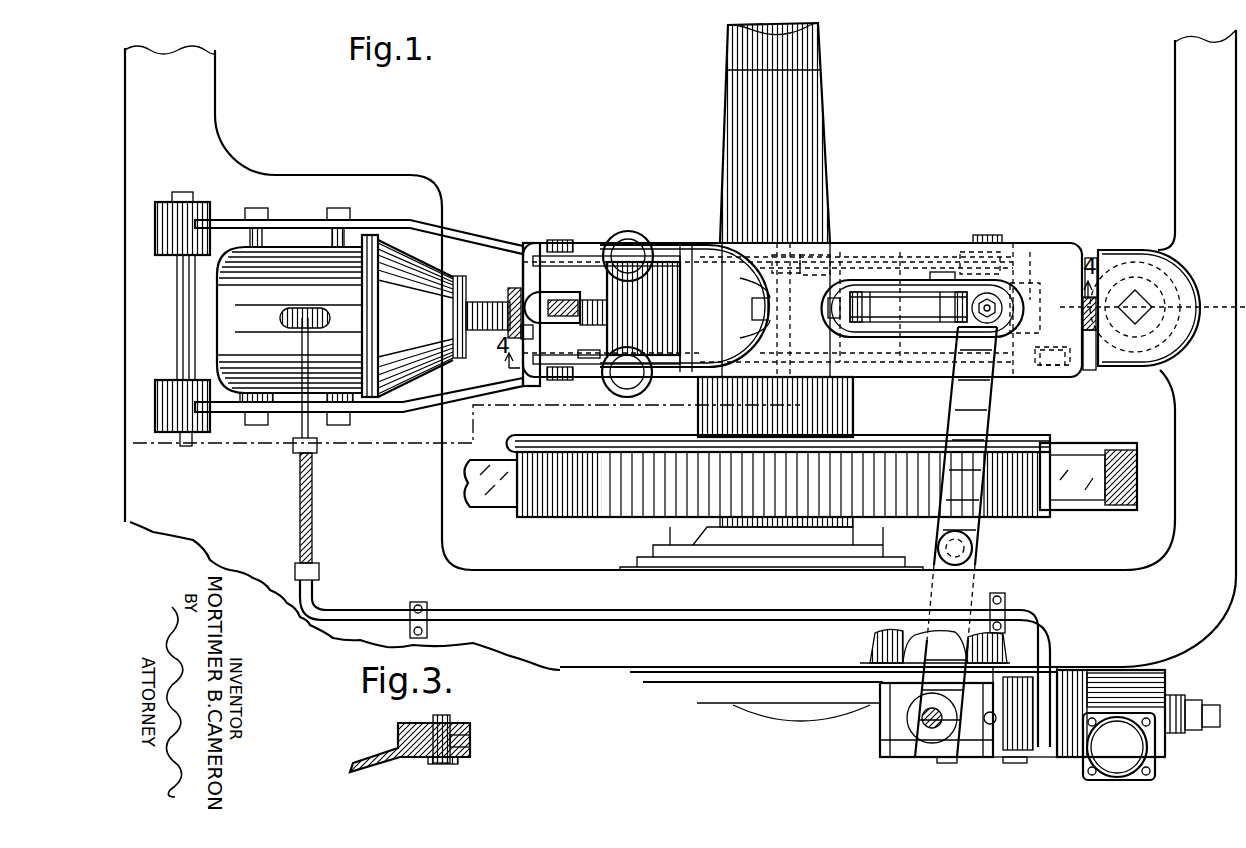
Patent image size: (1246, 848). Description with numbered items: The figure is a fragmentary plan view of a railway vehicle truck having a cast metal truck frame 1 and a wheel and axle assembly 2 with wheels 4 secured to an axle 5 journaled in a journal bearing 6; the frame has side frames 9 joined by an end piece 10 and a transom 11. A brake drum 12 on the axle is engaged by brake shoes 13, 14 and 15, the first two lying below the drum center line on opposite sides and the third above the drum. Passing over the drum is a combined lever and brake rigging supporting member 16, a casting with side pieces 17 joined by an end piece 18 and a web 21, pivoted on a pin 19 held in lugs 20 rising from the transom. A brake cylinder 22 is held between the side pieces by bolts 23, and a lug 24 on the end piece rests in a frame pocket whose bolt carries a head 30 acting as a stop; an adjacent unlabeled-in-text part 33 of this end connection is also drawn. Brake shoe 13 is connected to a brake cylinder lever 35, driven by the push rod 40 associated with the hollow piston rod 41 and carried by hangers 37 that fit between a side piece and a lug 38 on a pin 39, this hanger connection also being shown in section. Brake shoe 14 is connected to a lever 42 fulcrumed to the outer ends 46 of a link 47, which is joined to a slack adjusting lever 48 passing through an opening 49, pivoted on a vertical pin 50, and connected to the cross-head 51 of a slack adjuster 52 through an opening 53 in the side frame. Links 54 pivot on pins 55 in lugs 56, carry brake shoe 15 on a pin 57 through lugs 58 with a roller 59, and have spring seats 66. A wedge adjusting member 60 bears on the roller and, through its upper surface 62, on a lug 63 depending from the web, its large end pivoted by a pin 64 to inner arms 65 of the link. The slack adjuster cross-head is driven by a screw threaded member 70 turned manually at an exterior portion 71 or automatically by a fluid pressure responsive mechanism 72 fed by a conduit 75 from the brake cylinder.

In FIG. 1, the truck frame 1 is at (180, 520).
In FIG. 1, the wheel and axle assembly 2 is at (700, 407).
In FIG. 1, the wheel 4 is at (590, 507).
In FIG. 1, the axle 5 is at (808, 158).
In FIG. 1, the journal bearing 6 is at (688, 688).
In FIG. 1, the side frame 9 is at (592, 655).
In FIG. 1, the end piece 10 is at (1190, 145).
In FIG. 1, the transom 11 is at (198, 86).
In FIG. 1, the brake drum 12 is at (654, 275).
In FIG. 1, the brake element 13 is at (593, 282).
In FIG. 1, the brake element 14 is at (980, 252).
In FIG. 1, the brake element 15 is at (693, 283).
In FIG. 1, the combined lever and brake rigging supporting member 16 is at (868, 258).
In FIG. 1, the side piece 17 is at (422, 228).
In FIG. 1, the end piece 18 is at (1092, 262).
In FIG. 3, the end piece 18 is at (420, 758).
In FIG. 1, the pin 19 is at (183, 308).
In FIG. 1, the lug 20 is at (163, 202).
In FIG. 1, the web 21 is at (888, 272).
In FIG. 1, the brake cylinder 22 is at (387, 250).
In FIG. 1, the bolt 23 is at (332, 208).
In FIG. 1, the lug 24 is at (1096, 370).
In FIG. 1, the head 30 is at (1142, 318).
In FIG. 1, the gear housing 33 is at (1146, 356).
In FIG. 1, the brake cylinder lever 35 is at (520, 334).
In FIG. 3, the brake hanger 37 is at (462, 743).
In FIG. 3, the lug 38 is at (455, 722).
In FIG. 1, the pin 39 is at (1006, 264).
In FIG. 3, the pin 39 is at (450, 766).
In FIG. 1, the push rod 40 is at (528, 298).
In FIG. 1, the brake cylinder piston rod 41 is at (481, 302).
In FIG. 1, the lever 42 is at (1055, 372).
In FIG. 1, the outer end 46 is at (1062, 366).
In FIG. 1, the link 47 is at (1042, 262).
In FIG. 1, the slack adjusting lever 48 is at (970, 498).
In FIG. 1, the opening 49 is at (962, 338).
In FIG. 1, the pin 50 is at (975, 552).
In FIG. 1, the cross-head 51 is at (937, 757).
In FIG. 1, the slack adjuster 52 is at (1042, 757).
In FIG. 1, the opening 53 is at (870, 660).
In FIG. 1, the link 54 is at (637, 262).
In FIG. 1, the pin 55 is at (552, 242).
In FIG. 1, the lug 56 is at (543, 252).
In FIG. 1, the pin 57 is at (770, 252).
In FIG. 1, the lug 58 is at (742, 335).
In FIG. 1, the roller 59 is at (816, 248).
In FIG. 1, the adjusting member 60 is at (838, 312).
In FIG. 1, the upper surface 62 is at (942, 272).
In FIG. 1, the lug 63 is at (788, 240).
In FIG. 1, the pin 64 is at (946, 292).
In FIG. 1, the inner arm 65 is at (905, 337).
In FIG. 1, the spring seat 66 is at (618, 250).
In FIG. 1, the screw threaded member 70 is at (972, 745).
In FIG. 1, the exterior portion 71 is at (1196, 734).
In FIG. 1, the fluid pressure responsive mechanism 72 is at (1110, 755).
In FIG. 1, the conduit 75 is at (338, 614).